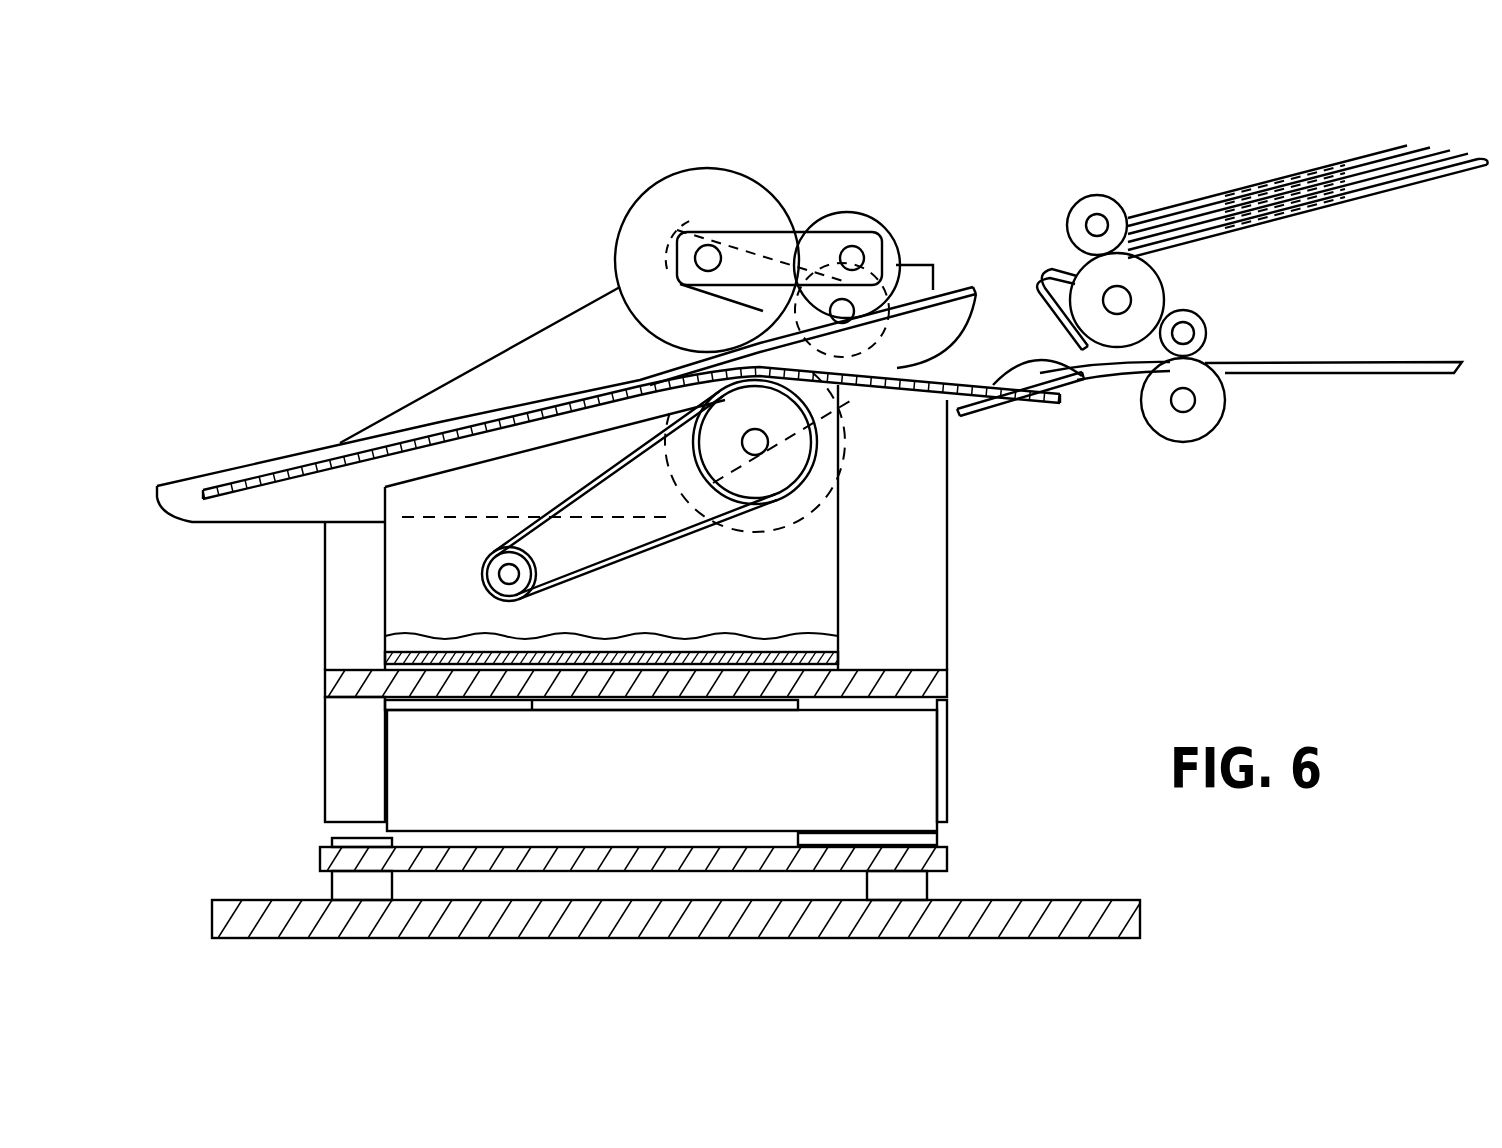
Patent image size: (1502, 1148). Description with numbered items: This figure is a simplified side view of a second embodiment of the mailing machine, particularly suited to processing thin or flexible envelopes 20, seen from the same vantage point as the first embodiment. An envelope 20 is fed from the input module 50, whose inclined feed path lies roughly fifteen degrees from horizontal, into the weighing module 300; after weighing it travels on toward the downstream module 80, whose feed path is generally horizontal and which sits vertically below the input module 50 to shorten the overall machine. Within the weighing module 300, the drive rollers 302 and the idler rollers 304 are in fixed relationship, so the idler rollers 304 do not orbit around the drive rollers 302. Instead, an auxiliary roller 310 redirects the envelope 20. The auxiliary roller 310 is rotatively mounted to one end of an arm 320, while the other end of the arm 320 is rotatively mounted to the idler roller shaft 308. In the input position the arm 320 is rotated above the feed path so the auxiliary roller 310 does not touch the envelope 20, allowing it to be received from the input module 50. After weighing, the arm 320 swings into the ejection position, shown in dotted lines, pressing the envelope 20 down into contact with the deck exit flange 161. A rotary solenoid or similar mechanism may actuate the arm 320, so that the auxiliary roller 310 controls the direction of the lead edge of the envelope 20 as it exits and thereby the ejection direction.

The weighing module 300 is at (338, 300).
The envelope 20 is at (584, 385).
The idler rollers 304 is at (682, 168).
The arm 320 is at (752, 231).
The auxiliary roller 310 is at (873, 219).
The idler roller shaft 308 is at (695, 258).
The drive rollers 302 is at (843, 448).
The exit flange 161 is at (1081, 378).
The input module 50 is at (1343, 146).
The downstream module 80 is at (1340, 334).